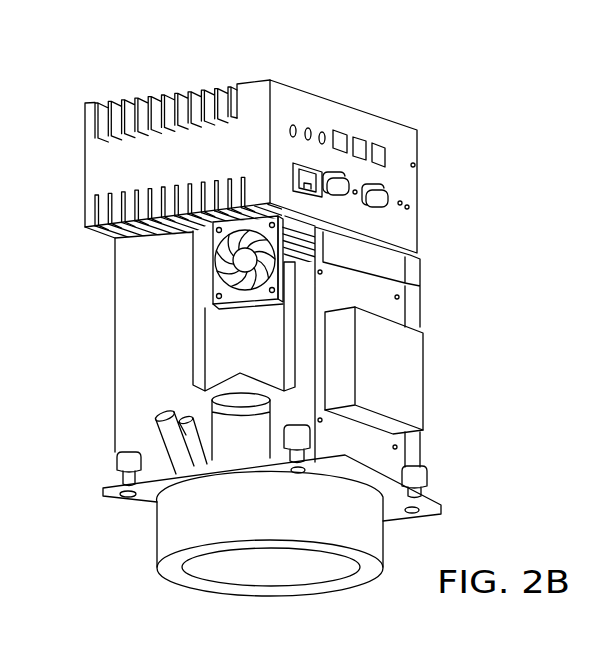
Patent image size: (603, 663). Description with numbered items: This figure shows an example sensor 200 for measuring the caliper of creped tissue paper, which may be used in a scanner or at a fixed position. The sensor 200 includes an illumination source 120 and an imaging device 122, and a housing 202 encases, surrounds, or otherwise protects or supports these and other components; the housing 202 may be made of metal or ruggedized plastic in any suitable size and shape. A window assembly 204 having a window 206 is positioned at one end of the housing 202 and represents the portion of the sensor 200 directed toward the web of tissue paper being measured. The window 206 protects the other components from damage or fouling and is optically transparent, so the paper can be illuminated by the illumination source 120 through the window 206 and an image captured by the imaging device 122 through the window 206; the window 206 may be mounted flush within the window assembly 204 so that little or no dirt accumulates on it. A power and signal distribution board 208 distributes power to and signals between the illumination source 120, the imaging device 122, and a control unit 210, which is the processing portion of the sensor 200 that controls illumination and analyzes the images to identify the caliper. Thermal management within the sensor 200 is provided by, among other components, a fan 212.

The sensor 200 is at (267, 337).
The control unit 210 is at (134, 68).
The fan 212 is at (209, 276).
The imaging device 122 is at (208, 338).
The housing 202 is at (112, 353).
The power and signal distribution board 208 is at (423, 383).
The illumination source 120 is at (421, 449).
The window assembly 204 is at (266, 567).
The window 206 is at (299, 574).